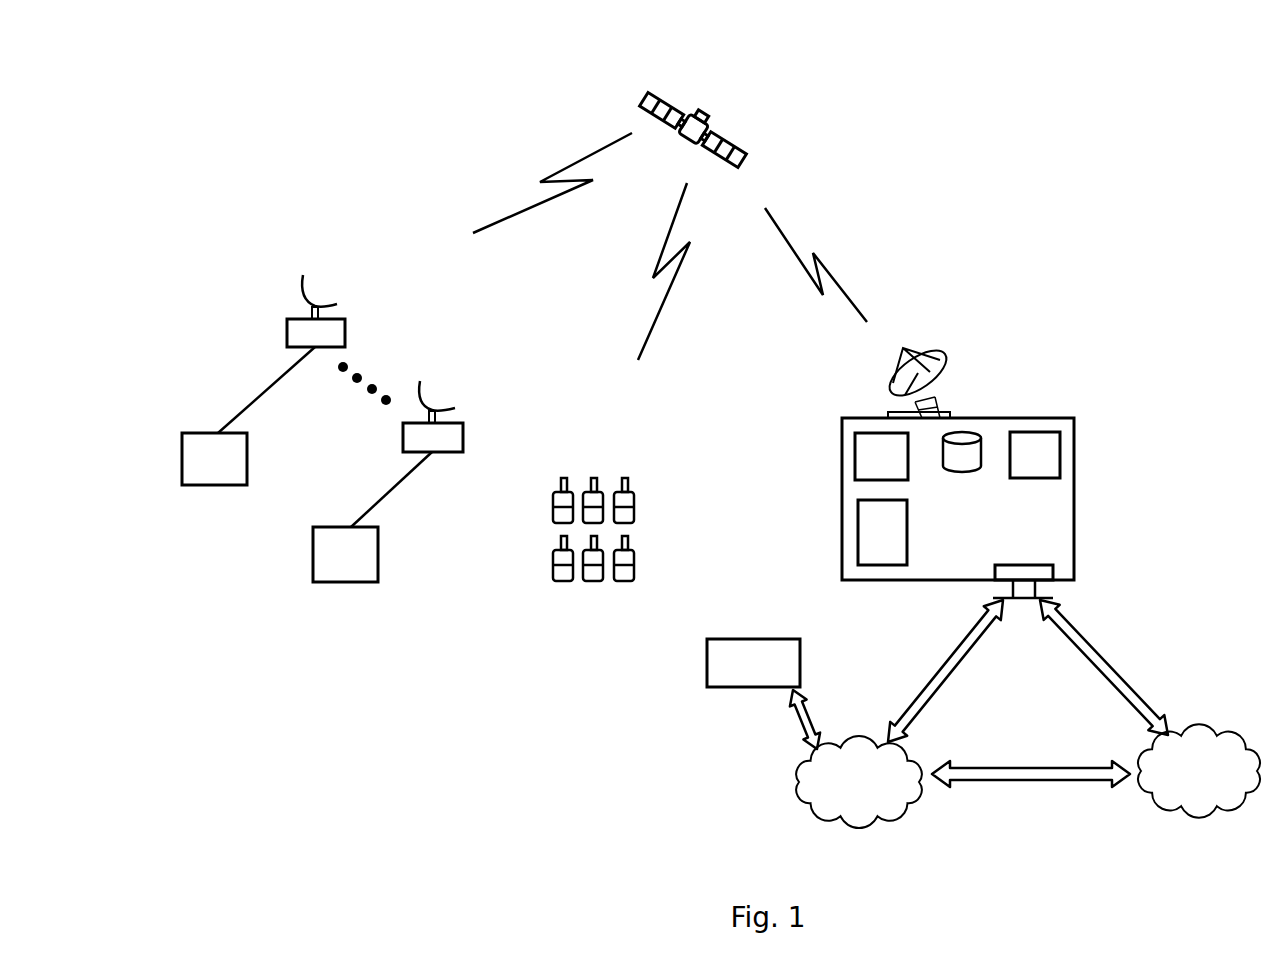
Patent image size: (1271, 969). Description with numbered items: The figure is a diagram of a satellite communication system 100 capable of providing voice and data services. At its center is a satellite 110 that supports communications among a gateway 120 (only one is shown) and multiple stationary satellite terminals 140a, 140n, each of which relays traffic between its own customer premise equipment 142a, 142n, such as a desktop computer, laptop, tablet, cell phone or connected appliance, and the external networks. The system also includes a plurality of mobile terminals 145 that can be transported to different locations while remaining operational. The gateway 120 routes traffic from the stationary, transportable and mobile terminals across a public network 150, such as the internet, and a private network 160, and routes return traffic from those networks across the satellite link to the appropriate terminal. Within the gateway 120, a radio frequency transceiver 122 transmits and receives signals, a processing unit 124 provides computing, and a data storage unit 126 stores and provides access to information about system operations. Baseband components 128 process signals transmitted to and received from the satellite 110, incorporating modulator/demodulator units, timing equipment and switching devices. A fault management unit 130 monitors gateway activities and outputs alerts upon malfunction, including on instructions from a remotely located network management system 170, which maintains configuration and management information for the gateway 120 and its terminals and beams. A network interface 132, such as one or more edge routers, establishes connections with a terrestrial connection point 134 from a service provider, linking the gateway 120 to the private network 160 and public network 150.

The satellite communication system 100 is at (1098, 68).
The satellite 110 is at (736, 152).
The gateway 120 is at (1140, 320).
The radio frequency transceiver 122 is at (948, 361).
The processing unit 124 is at (855, 455).
The data storage unit 126 is at (966, 472).
The baseband components 128 is at (858, 536).
The fault management unit 130 is at (1060, 451).
The network interface 132 is at (1025, 565).
The terrestrial connection point 134 is at (1024, 600).
The stationary satellite terminal 140a is at (287, 331).
The stationary satellite terminal 140n is at (403, 437).
The customer premise equipment 142a is at (215, 485).
The customer premise equipment 142n is at (345, 582).
The mobile terminals 145 is at (531, 588).
The public network 150 is at (1199, 781).
The private network 160 is at (858, 792).
The network management system 170 is at (707, 663).